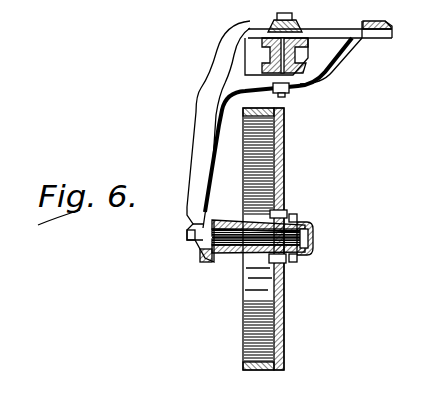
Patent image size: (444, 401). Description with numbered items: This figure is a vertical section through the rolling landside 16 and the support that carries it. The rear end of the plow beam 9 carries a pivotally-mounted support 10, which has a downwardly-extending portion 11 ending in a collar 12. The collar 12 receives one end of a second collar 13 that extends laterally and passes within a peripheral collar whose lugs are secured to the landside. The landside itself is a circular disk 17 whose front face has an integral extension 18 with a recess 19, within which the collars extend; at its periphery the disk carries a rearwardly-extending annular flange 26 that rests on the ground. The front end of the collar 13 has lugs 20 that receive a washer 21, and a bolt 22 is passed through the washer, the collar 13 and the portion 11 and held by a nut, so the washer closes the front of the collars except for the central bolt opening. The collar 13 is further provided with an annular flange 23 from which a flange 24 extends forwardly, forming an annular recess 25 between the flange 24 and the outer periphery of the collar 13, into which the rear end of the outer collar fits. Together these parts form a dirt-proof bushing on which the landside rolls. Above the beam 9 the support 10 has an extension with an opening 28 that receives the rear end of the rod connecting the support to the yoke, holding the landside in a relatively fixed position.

The beam 9 is at (300, 72).
The support 10 is at (327, 23).
The downwardly-extending portion 11 is at (206, 124).
The collar 12 is at (203, 258).
The collar 13 is at (192, 241).
The rolling landside 16 is at (286, 176).
The circular disk 17 is at (244, 142).
The integral extension 18 is at (315, 238).
The recess 19 is at (306, 227).
The lugs 20 is at (298, 221).
The washer 21 is at (305, 254).
The bolt 22 is at (188, 244).
The annular flange 23 is at (258, 237).
The flange 24 is at (212, 221).
The annular recess 25 is at (245, 256).
The rearwardly-extending annular flange 26 is at (250, 367).
The opening 28 is at (378, 42).